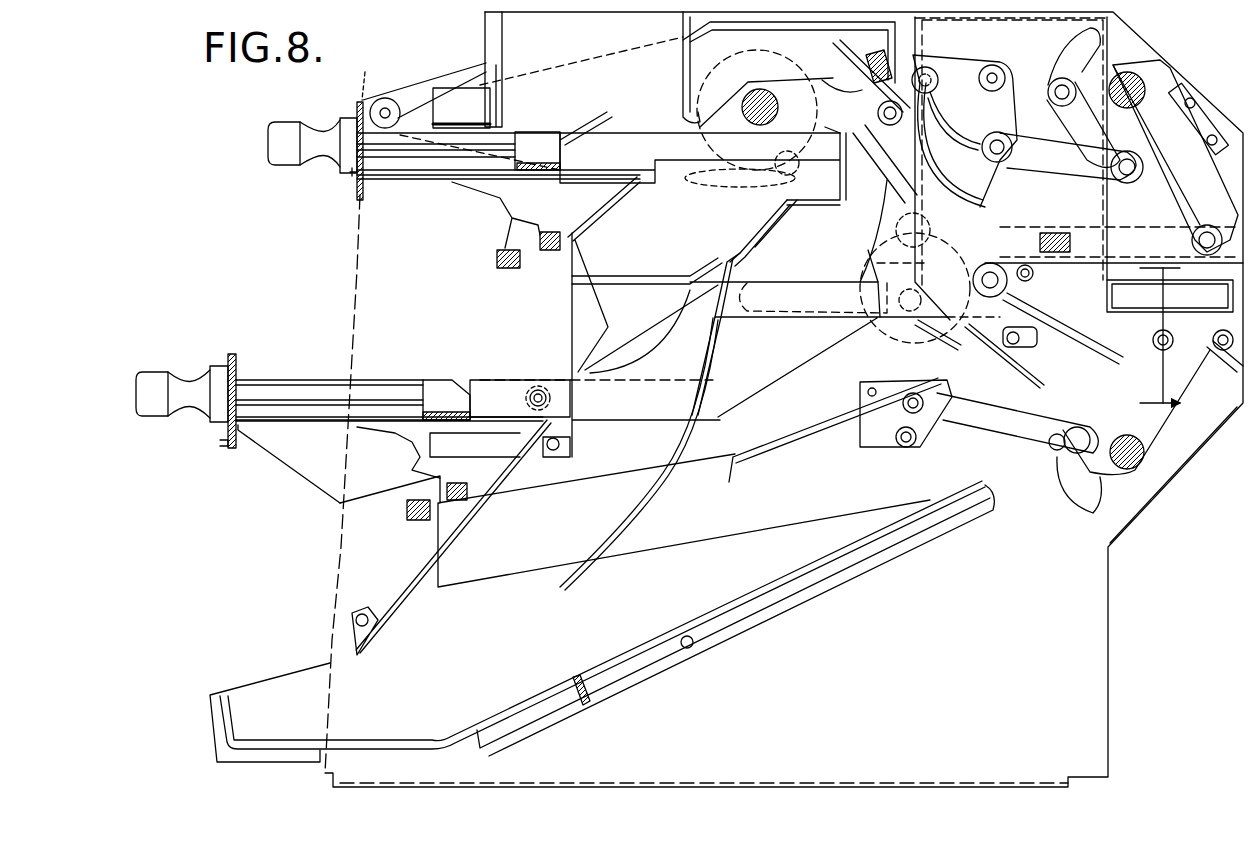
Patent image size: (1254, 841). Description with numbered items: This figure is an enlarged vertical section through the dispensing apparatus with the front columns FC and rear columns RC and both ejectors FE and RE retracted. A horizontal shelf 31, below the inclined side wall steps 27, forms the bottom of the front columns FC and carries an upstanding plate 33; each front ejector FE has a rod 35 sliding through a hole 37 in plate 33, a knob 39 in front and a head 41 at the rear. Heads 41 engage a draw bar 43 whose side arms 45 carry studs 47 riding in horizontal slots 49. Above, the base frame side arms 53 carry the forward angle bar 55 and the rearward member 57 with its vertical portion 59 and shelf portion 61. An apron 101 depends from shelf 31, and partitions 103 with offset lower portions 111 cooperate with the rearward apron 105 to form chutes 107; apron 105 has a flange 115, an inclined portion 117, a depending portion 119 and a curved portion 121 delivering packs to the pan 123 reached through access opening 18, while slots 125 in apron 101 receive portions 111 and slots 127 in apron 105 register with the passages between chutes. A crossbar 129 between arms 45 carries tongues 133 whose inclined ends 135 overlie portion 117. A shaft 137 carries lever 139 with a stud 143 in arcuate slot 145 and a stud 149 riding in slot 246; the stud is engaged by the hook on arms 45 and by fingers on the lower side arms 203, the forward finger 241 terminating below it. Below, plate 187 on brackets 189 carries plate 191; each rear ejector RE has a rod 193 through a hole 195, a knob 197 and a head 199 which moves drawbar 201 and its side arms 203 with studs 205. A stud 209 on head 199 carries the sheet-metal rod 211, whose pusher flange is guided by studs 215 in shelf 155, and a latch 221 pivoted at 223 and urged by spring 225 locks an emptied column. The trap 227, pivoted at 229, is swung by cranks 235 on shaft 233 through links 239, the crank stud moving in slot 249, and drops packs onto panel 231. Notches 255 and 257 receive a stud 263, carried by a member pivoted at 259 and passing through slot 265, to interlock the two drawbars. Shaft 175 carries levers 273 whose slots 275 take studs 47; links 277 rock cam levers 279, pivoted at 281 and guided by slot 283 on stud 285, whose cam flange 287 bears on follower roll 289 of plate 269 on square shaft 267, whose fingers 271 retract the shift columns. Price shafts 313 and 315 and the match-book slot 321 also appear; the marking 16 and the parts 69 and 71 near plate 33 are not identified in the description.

The section line 16 is at (1149, 337).
The access opening 18 is at (258, 690).
The inclined step 27 is at (442, 86).
The horizontal shelf 31 is at (447, 184).
The upstanding vertical plate 33 is at (358, 102).
The rod 35 is at (430, 172).
The hole 37 is at (366, 178).
The knob 39 is at (308, 168).
The head 41 is at (609, 132).
The draw bar 43 is at (535, 162).
The side arm 45 is at (720, 182).
The stud 47 is at (1180, 226).
The horizontal slot 49 is at (1078, 227).
The side arm 53 is at (592, 56).
The forward frame member 55 is at (492, 72).
The rearward frame member 57 is at (681, 100).
The vertical portion 59 is at (682, 70).
The shelf portion 61 is at (790, 24).
The roller 69 is at (385, 98).
The pin 71 is at (358, 75).
The apron 101 is at (598, 228).
The partition 103 is at (570, 310).
The rearward apron 105 is at (744, 260).
The chute 107 is at (650, 275).
The lower portion 111 is at (572, 330).
The upper horizontal flange portion 115 is at (800, 206).
The inclined portion 117 is at (748, 248).
The depending portion 119 is at (710, 355).
The curved portion 121 is at (622, 518).
The pan 123 is at (388, 742).
The vertical slot 125 is at (573, 283).
The vertical slot 127 is at (722, 325).
The horizontal crossbar 129 is at (838, 130).
The tongue 133 is at (782, 202).
The forward end portion 135 is at (752, 236).
The horizontal shaft 137 is at (752, 92).
The lever 139 is at (862, 236).
The stud 143 is at (795, 156).
The arcuate slot 145 is at (740, 182).
The stud 149 is at (942, 228).
The shelf 155 is at (1026, 340).
The shaft 175 is at (1140, 85).
The horizontal plate 187 is at (296, 422).
The bracket 189 is at (296, 480).
The upstanding vertical plate 191 is at (232, 354).
The rod 193 is at (310, 380).
The hole 195 is at (240, 372).
The knob 197 is at (146, 420).
The head 199 is at (490, 380).
The drawbar 201 is at (462, 400).
The side arm 203 is at (806, 384).
The stud 205 is at (1192, 242).
The stud 209 is at (538, 385).
The rod 211 is at (673, 302).
The stud 215 is at (1172, 292).
The latch 221 is at (1100, 336).
The pivot 223 is at (1158, 350).
The spring 225 is at (1225, 362).
The trap 227 is at (795, 440).
The pivotal mounting 229 is at (906, 448).
The inclined panel 231 is at (787, 562).
The horizontal shaft 233 is at (1127, 470).
The crank 235 is at (1170, 425).
The link 239 is at (1000, 445).
The forward finger 241 is at (875, 266).
The arcuate slot 246 is at (836, 282).
The arcuate slot 249 is at (1066, 500).
The bottom notch 255 is at (988, 262).
The notch 257 is at (975, 300).
The pivot 259 is at (1070, 244).
The stud 263 is at (1023, 265).
The slot 265 is at (990, 198).
The shaft 267 is at (876, 56).
The plate 269 is at (866, 92).
The finger 271 is at (838, 48).
The lever 273 is at (1205, 152).
The slot 275 is at (1222, 192).
The link 277 is at (1040, 167).
The lever 279 is at (1010, 110).
The pivot 281 is at (995, 66).
The arcuate slot 283 is at (955, 108).
The stud 285 is at (942, 72).
The curved flange portion 287 is at (965, 170).
The follower roll 289 is at (878, 113).
The front price shaft 313 is at (508, 270).
The rear price shaft 315 is at (552, 251).
The slot 321 is at (660, 548).
The front column ejector FE is at (268, 120).
The rear column ejector RE is at (138, 375).
The front column FC is at (492, 32).
The rear column RC is at (1135, 40).